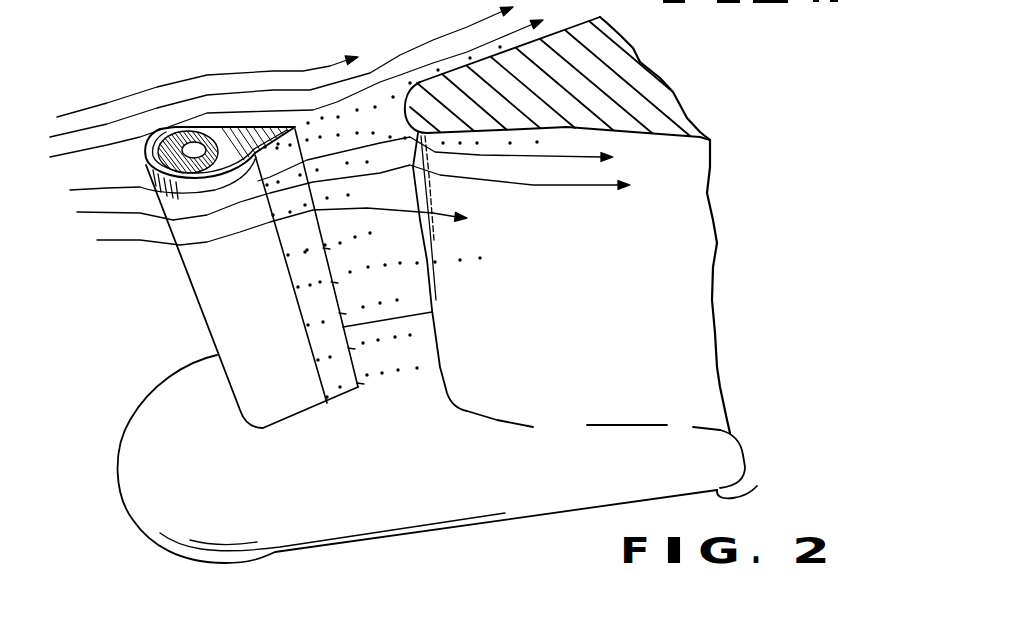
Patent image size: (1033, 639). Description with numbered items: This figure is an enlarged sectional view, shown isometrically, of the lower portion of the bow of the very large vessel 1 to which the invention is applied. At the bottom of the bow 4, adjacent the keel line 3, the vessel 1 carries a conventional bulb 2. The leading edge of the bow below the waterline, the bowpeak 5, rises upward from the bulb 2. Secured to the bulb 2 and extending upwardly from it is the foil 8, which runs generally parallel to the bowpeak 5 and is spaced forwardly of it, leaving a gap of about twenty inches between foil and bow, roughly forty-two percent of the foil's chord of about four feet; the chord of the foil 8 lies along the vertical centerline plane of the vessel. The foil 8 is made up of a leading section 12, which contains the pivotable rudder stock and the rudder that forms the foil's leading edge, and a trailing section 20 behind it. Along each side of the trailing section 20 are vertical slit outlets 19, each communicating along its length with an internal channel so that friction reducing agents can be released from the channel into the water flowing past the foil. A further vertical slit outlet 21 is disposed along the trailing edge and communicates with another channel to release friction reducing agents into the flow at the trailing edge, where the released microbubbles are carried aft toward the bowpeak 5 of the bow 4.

The vessel 1 is at (693, 268).
The bulb 2 is at (148, 392).
The keel line 3 is at (748, 477).
The bow 4 is at (542, 286).
The bowpeak 5 is at (422, 238).
The foil 8 is at (253, 300).
The leading section 12 is at (182, 265).
The vertical slit outlets 19 is at (300, 312).
The trailing section 20 is at (337, 373).
The vertical slit outlet 21 is at (295, 127).